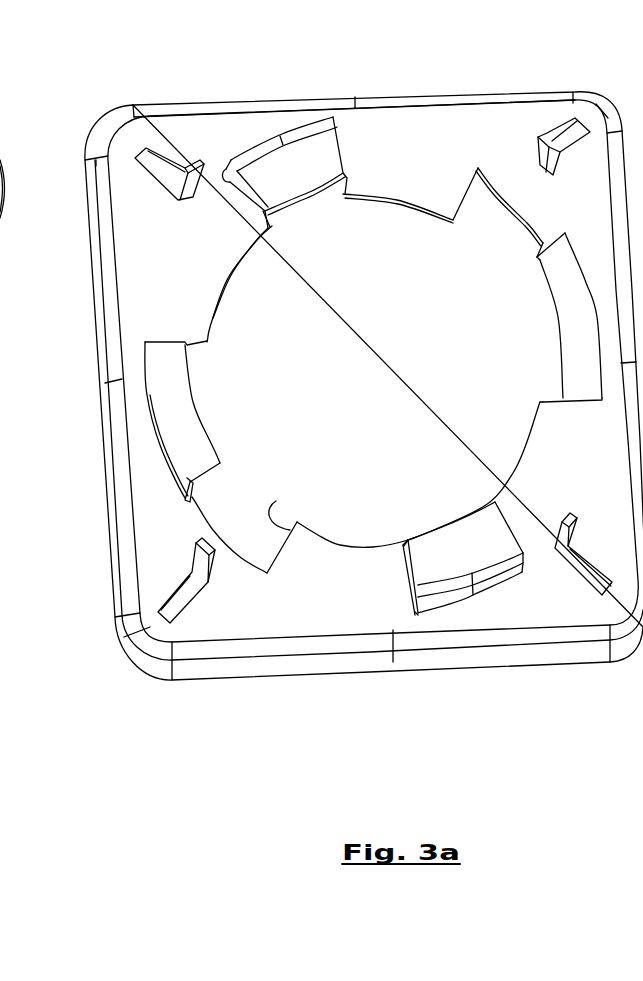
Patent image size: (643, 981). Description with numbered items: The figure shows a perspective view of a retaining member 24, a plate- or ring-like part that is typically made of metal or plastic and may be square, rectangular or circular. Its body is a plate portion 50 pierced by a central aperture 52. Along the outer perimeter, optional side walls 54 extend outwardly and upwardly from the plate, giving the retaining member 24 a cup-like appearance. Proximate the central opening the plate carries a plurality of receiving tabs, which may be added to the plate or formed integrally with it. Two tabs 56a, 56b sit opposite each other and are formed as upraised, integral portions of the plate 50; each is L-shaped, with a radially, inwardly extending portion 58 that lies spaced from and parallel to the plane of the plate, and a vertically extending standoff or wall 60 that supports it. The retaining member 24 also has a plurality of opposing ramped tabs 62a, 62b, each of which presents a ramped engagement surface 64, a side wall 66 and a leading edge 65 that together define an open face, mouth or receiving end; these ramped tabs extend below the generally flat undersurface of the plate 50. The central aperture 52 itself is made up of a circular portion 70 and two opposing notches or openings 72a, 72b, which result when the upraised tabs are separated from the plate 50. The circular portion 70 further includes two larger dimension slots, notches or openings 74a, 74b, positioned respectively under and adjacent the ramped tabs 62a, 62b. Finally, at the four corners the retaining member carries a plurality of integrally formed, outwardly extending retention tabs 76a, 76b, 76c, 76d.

The retaining member 24 is at (182, 100).
The plate portion 50 is at (440, 163).
The central aperture 52 is at (217, 316).
The side walls 54 is at (301, 106).
The tab 56a is at (295, 175).
The tab 56b is at (456, 548).
The radially inwardly extending portion 58 is at (313, 157).
The vertically extending standoff or wall 60 is at (229, 172).
The ramped tab 62a is at (356, 365).
The ramped tab 62b is at (582, 348).
The ramped engagement surface 64 is at (163, 387).
The leading edge 65 is at (208, 478).
The side wall 66 is at (195, 502).
The circular portion 70 is at (227, 283).
The notch or opening 72a is at (268, 220).
The notch or opening 72b is at (408, 540).
The larger dimension slot, notch or opening 74a is at (465, 197).
The larger dimension slot, notch or opening 74b is at (294, 531).
The retention tab 76a is at (213, 568).
The retention tab 76b is at (533, 160).
The retention tab 76c is at (561, 530).
The retention tab 76d is at (205, 168).